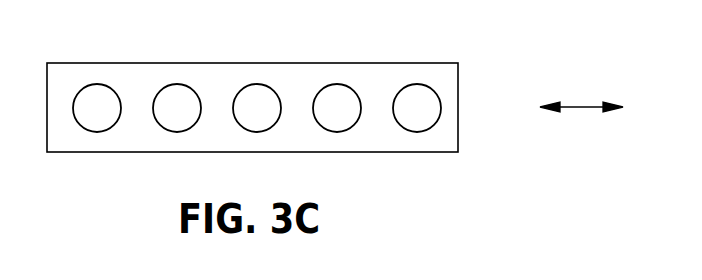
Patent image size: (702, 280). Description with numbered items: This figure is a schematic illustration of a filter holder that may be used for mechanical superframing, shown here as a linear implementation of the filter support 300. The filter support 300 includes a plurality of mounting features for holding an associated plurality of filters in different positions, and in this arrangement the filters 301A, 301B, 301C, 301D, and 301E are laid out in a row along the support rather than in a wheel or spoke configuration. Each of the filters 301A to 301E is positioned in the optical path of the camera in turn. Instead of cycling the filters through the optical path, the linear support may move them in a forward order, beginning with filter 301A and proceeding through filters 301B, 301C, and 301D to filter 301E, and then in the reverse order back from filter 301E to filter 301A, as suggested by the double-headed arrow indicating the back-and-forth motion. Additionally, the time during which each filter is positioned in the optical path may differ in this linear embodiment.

The filter support 300 is at (458, 118).
The filter 301A is at (96, 90).
The filter 301B is at (176, 90).
The filter 301C is at (256, 90).
The filter 301D is at (336, 90).
The filter 301E is at (416, 90).